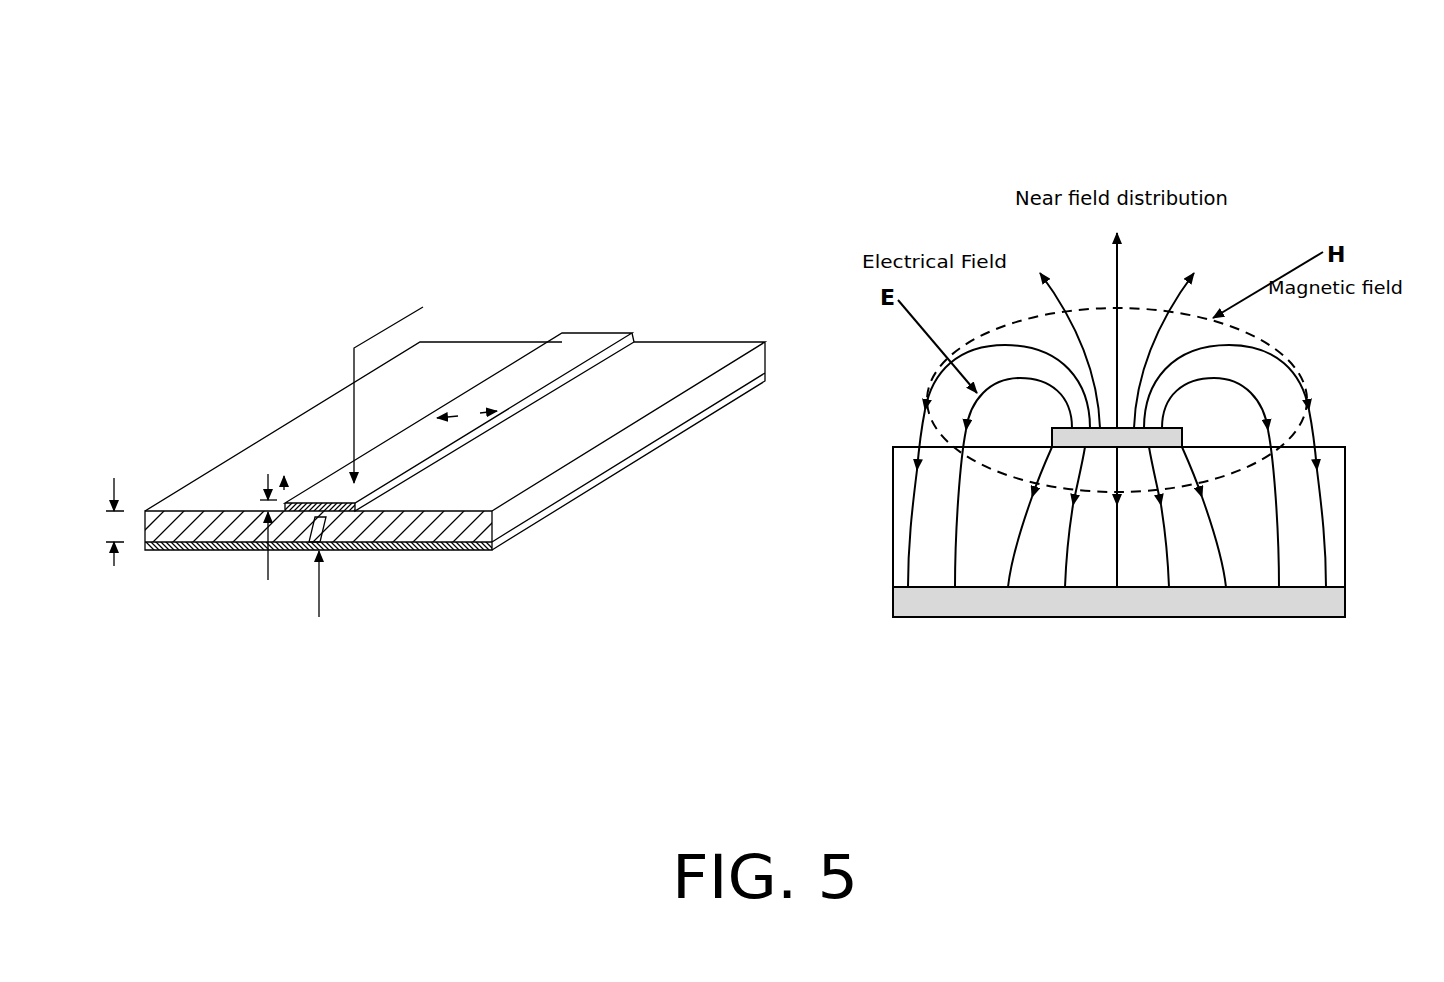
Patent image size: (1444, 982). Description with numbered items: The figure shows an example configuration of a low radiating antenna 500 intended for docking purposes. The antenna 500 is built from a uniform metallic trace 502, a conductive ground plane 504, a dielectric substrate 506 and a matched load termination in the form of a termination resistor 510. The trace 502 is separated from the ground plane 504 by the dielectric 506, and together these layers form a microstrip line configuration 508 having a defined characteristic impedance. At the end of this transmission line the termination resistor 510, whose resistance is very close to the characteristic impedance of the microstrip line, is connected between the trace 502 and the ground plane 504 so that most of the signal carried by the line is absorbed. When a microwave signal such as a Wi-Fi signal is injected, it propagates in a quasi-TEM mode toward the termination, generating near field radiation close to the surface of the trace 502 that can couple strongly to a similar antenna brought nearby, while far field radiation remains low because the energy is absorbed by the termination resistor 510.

The low radiating antenna 500 is at (803, 98).
The uniform metallic trace 502 is at (495, 385).
The conductive ground plane 504 is at (320, 621).
The dielectric substrate 506 is at (200, 481).
The microstrip line configuration 508 is at (476, 252).
The termination resistor 510 is at (319, 526).